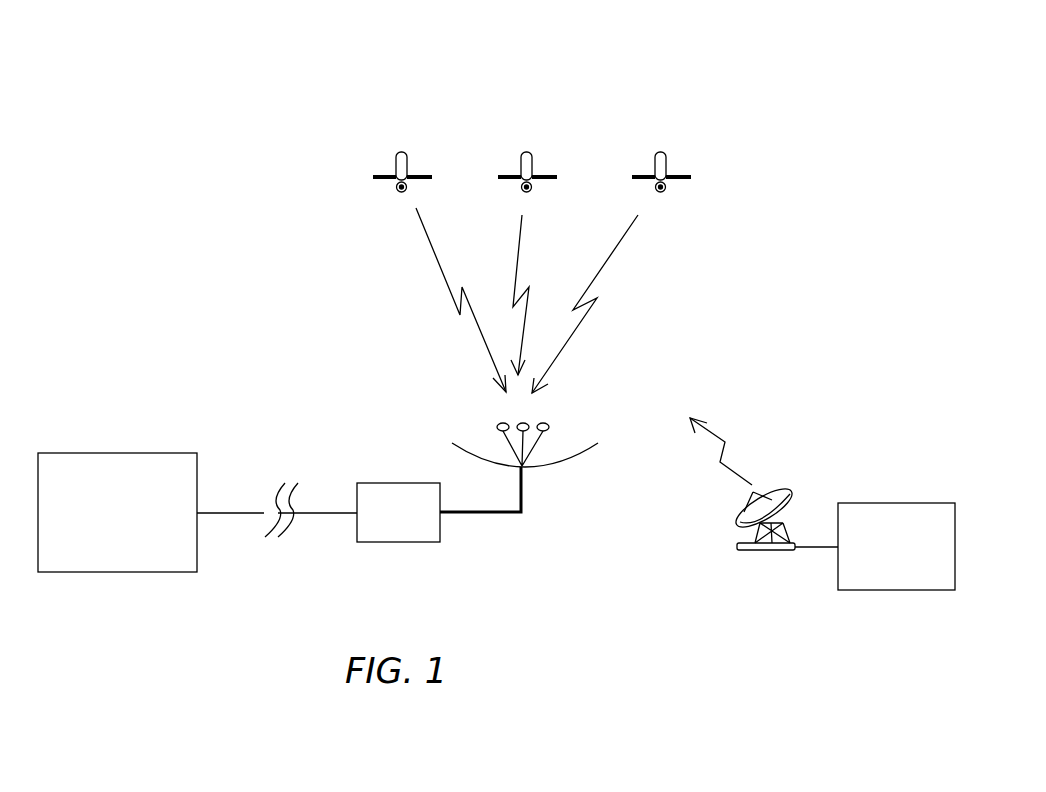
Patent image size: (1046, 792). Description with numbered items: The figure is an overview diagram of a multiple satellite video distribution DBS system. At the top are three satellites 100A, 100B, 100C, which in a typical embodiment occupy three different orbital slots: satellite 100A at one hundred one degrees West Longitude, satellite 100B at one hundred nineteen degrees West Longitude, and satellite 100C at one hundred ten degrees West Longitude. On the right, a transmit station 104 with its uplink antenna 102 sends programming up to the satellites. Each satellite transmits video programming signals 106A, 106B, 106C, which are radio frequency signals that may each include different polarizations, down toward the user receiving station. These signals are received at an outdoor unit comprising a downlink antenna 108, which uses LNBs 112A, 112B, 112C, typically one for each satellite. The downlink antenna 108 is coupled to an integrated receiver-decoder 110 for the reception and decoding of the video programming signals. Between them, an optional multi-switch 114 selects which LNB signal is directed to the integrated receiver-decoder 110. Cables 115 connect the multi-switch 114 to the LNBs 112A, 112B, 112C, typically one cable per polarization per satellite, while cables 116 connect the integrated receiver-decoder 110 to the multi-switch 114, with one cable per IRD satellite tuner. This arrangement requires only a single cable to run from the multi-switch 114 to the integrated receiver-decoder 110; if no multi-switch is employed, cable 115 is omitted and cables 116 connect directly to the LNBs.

The satellite 100A is at (391, 164).
The satellite 100B is at (672, 164).
The satellite 100C is at (528, 148).
The uplink antenna 102 is at (771, 490).
The transmit station 104 is at (898, 503).
The video programming signal 106A is at (438, 267).
The video programming signal 106B is at (606, 265).
The video programming signal 106C is at (519, 252).
The downlink antenna 108 is at (452, 444).
The integrated receiver-decoder 110 is at (135, 573).
The LNB 112A is at (497, 426).
The LNB 112B is at (526, 421).
The LNB 112C is at (548, 425).
The multi-switch 114 is at (398, 542).
The cable 115 is at (500, 514).
The cable 116 is at (310, 514).